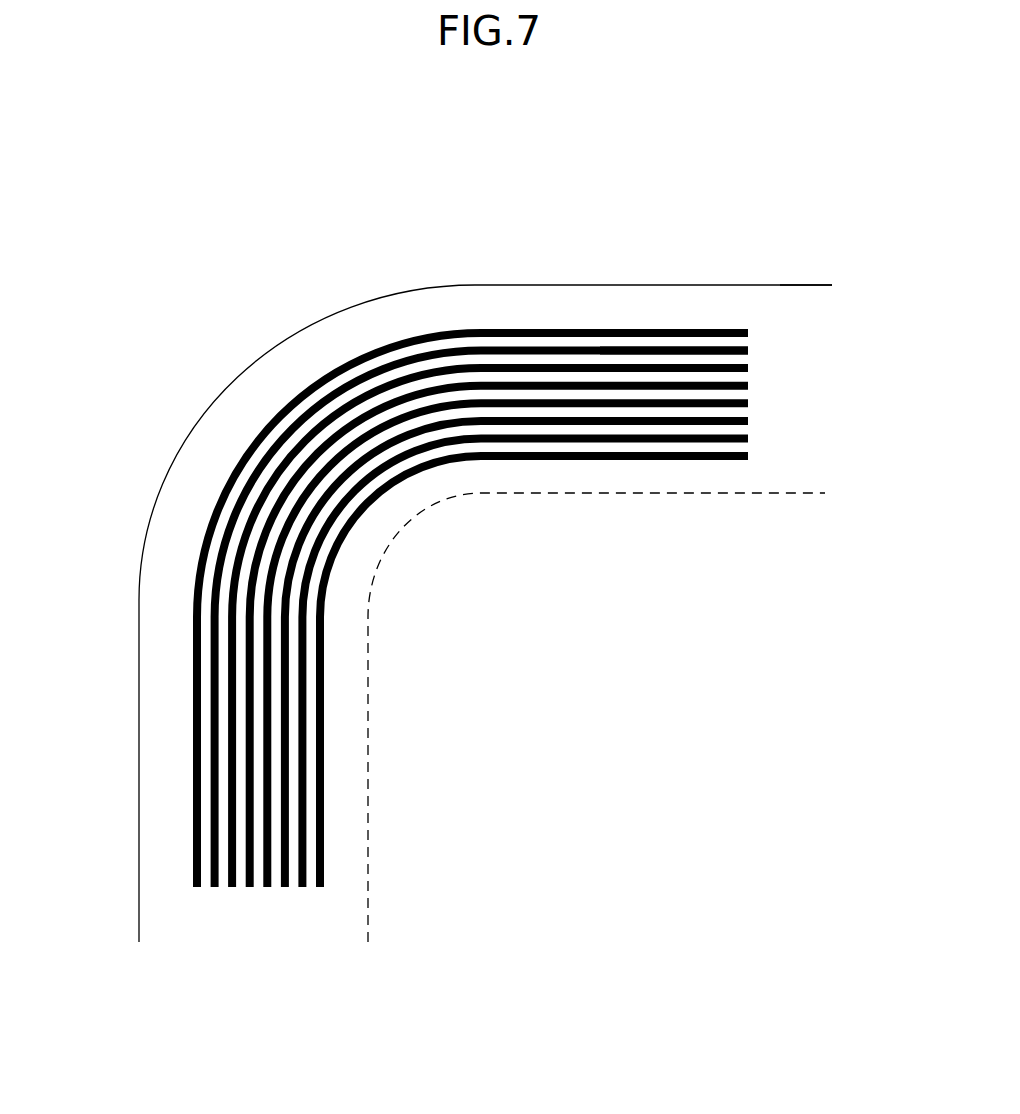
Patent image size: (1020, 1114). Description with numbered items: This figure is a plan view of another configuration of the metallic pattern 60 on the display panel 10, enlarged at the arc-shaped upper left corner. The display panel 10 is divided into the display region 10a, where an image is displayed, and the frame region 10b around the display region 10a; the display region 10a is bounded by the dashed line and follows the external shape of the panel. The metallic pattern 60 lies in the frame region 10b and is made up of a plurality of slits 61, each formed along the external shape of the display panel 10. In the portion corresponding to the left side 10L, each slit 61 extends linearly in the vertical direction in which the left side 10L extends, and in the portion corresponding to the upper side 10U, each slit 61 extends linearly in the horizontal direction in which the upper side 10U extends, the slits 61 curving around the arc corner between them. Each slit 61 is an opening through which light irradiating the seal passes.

The display panel 10 is at (441, 579).
The upper side 10U is at (722, 284).
The left side 10L is at (138, 712).
The display region 10a is at (785, 493).
The frame region 10b is at (828, 326).
The metallic pattern 60 is at (426, 333).
The slit 61 is at (750, 340).